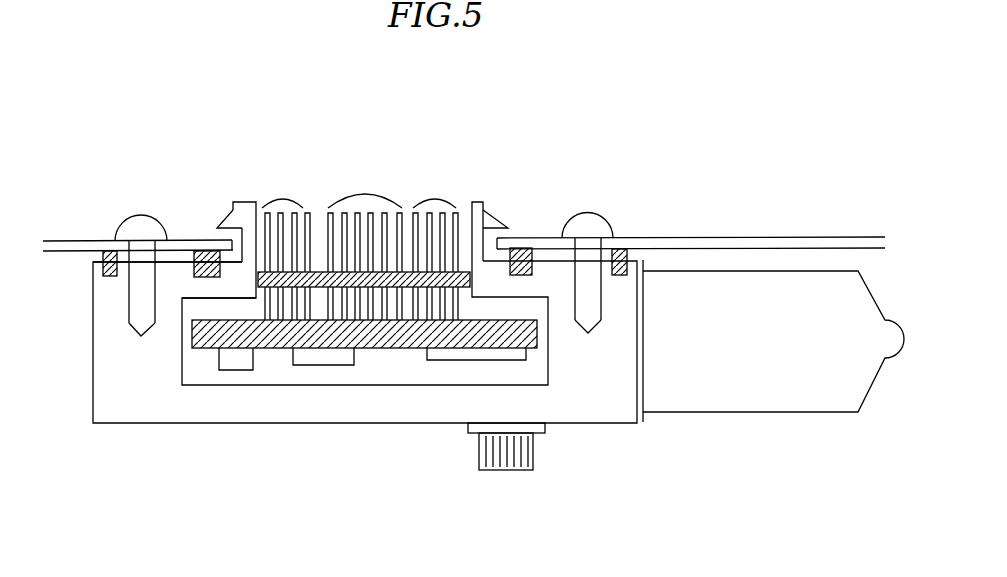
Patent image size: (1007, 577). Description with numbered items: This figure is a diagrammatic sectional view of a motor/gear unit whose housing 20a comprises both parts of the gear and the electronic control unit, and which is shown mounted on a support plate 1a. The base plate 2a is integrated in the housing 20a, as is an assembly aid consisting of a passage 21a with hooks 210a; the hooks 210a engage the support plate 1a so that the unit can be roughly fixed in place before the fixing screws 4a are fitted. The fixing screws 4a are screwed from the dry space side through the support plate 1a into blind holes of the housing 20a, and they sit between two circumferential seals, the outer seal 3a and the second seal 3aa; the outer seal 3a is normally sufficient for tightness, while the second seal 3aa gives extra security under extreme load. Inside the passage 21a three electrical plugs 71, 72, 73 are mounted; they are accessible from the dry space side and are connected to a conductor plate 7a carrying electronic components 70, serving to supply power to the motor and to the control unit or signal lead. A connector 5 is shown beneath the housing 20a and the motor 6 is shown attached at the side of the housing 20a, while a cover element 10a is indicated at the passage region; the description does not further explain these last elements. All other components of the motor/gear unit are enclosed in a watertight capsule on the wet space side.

The support plate 1a is at (63, 252).
The base plate 2a is at (180, 280).
The outer seal 3a is at (104, 252).
The second seal 3aa is at (203, 263).
The fixing screws 4a is at (140, 265).
The connector 5 is at (497, 455).
The motor 6 is at (752, 380).
The conductor plate 7a is at (205, 345).
The housing cover 10a is at (232, 277).
The housing 20a is at (132, 408).
The passage 21a is at (249, 244).
The electronic components 70 is at (473, 353).
The electrical plug 71 is at (283, 197).
The electrical plug 72 is at (365, 189).
The electrical plug 73 is at (437, 190).
The hooks 210a is at (237, 219).